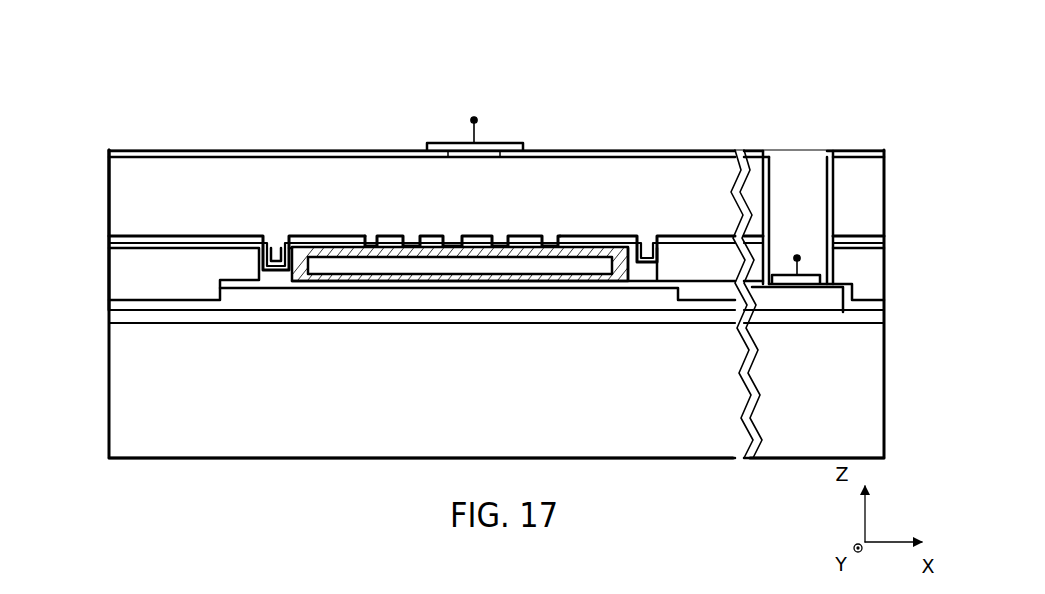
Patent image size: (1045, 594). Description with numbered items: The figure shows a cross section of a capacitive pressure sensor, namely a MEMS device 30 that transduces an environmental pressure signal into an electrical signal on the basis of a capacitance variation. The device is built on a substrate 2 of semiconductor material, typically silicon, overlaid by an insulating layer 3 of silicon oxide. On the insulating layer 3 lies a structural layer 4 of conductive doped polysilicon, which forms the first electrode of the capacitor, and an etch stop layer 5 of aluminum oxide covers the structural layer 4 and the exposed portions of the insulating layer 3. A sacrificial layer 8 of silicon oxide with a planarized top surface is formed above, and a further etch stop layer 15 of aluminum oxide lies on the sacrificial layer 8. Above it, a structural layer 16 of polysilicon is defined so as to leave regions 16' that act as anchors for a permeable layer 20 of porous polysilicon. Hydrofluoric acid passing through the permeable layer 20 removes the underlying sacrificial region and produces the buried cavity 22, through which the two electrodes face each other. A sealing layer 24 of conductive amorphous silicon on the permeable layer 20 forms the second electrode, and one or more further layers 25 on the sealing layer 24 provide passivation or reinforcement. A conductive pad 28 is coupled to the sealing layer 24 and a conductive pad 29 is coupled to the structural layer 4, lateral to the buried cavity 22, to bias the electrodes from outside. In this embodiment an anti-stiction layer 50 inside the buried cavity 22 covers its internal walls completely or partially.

The MEMS device 30 is at (479, 234).
The substrate 2 is at (110, 443).
The insulating layer 3 is at (263, 318).
The structural layer 4 is at (363, 301).
The etch stop layer 5 is at (144, 304).
The sacrificial layer 8 is at (100, 270).
The etch stop layer 15 is at (134, 236).
The structural layer 16 is at (496, 242).
The regions 16' is at (458, 215).
The permeable layer 20 is at (263, 234).
The buried cavity 22 is at (563, 262).
The sealing layer 24 is at (197, 162).
The further layers 25 is at (237, 151).
The conductive pad 28 is at (507, 143).
The conductive pad 29 is at (815, 275).
The anti-stiction layer 50 is at (503, 280).